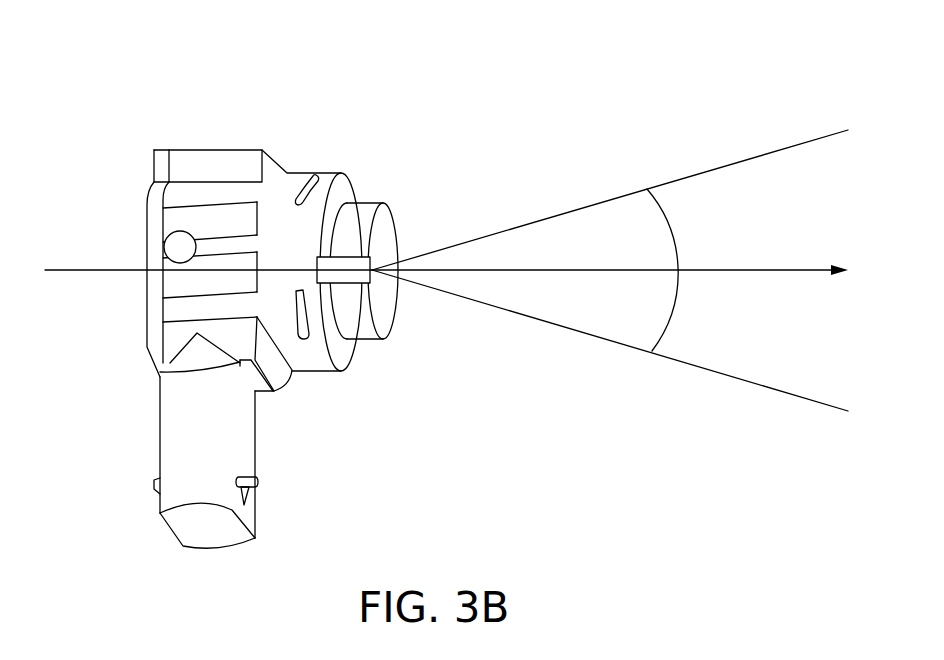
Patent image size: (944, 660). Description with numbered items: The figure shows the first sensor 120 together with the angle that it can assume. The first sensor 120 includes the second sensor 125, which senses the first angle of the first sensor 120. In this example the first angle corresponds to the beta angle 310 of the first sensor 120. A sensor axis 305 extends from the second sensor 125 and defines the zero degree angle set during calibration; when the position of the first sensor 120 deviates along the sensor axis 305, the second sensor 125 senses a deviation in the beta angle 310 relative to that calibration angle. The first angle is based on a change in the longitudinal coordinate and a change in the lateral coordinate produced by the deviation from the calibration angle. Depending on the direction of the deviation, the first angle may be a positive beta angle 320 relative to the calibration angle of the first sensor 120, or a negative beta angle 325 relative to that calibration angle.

The first sensor 120 is at (227, 293).
The sensor axis 305 is at (89, 246).
The second sensor 125 is at (343, 271).
The beta angle 310 is at (557, 237).
The positive beta angle 320 is at (682, 190).
The negative beta angle 325 is at (678, 352).